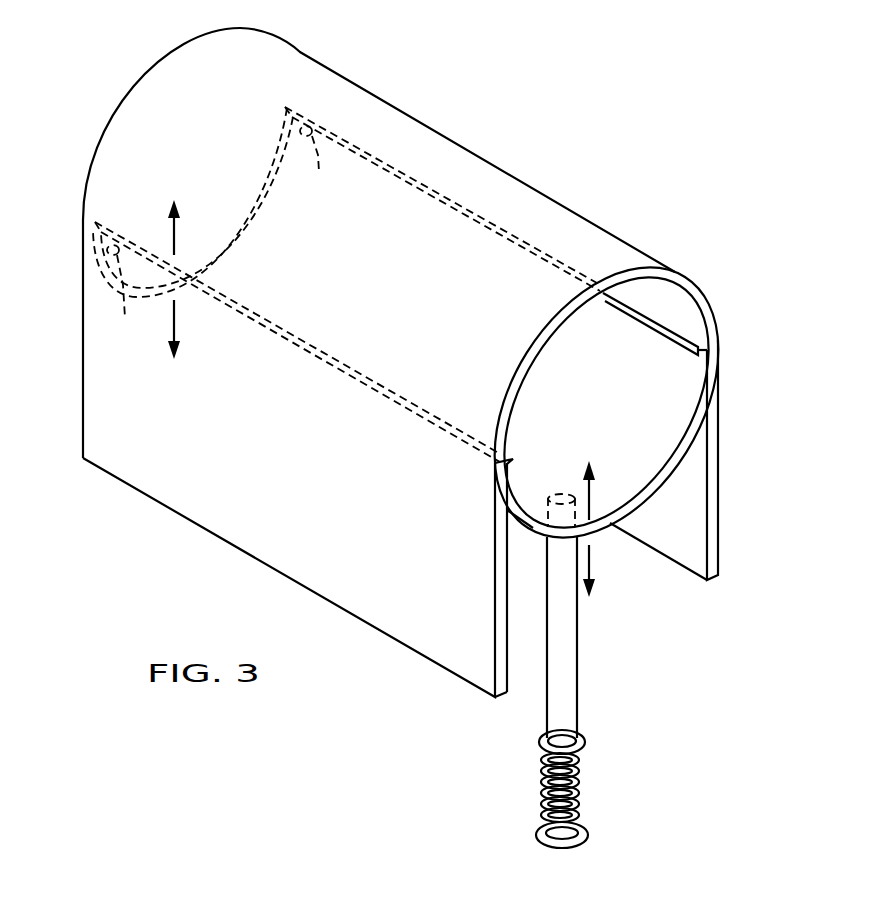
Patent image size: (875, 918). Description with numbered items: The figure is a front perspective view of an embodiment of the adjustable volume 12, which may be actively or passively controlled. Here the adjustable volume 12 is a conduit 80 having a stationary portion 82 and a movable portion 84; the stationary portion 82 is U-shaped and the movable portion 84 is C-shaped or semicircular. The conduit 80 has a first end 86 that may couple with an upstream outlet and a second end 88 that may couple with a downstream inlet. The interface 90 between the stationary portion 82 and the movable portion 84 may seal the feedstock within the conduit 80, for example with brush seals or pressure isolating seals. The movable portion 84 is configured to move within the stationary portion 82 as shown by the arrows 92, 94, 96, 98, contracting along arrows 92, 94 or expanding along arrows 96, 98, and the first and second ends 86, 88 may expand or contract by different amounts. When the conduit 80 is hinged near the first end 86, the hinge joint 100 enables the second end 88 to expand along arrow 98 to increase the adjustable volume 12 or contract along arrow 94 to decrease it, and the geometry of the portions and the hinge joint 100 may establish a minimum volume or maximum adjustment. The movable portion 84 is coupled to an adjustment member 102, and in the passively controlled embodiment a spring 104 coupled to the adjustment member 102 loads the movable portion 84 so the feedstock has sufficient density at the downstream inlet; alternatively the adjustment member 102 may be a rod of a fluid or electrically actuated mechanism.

The adjustable volume 12 is at (750, 441).
The conduit 80 is at (707, 391).
The stationary portion 82 is at (678, 275).
The movable portion 84 is at (538, 536).
The first end 86 is at (150, 76).
The second end 88 is at (552, 330).
The interface 90 is at (502, 467).
The arrow 92 is at (176, 232).
The arrow 94 is at (591, 493).
The arrow 96 is at (177, 325).
The arrow 98 is at (591, 560).
The hinge joint 100 is at (217, 237).
The adjustment member 102 is at (578, 701).
The spring 104 is at (546, 784).